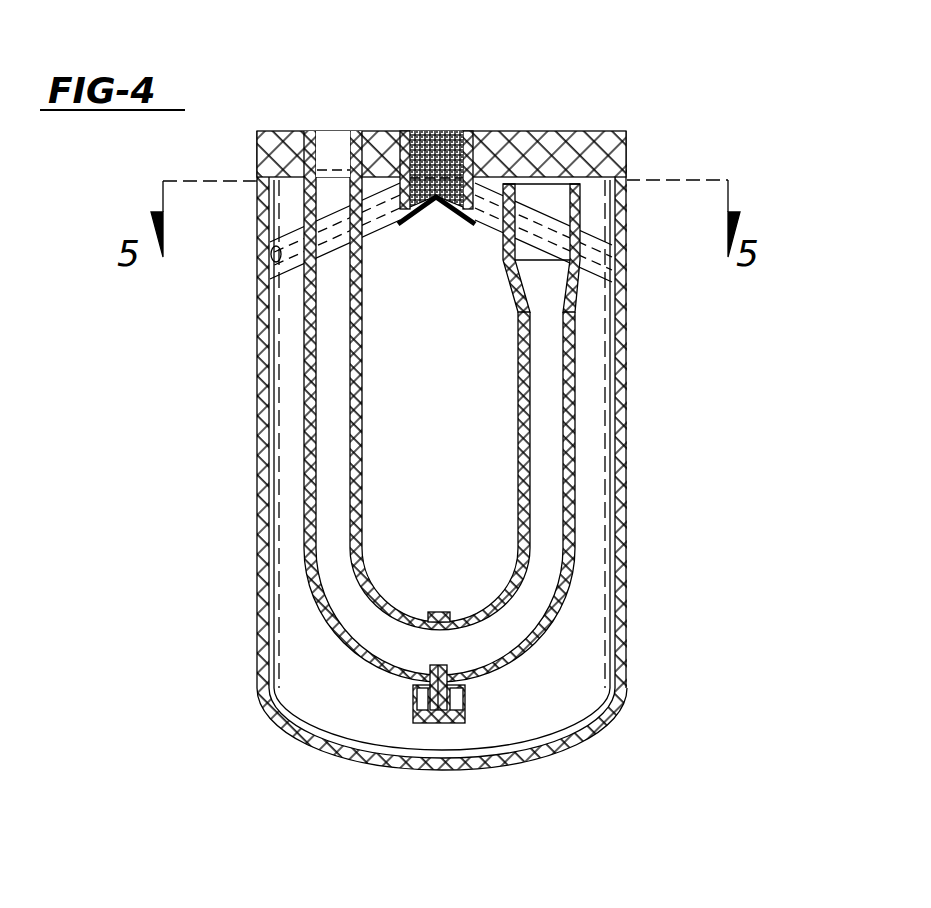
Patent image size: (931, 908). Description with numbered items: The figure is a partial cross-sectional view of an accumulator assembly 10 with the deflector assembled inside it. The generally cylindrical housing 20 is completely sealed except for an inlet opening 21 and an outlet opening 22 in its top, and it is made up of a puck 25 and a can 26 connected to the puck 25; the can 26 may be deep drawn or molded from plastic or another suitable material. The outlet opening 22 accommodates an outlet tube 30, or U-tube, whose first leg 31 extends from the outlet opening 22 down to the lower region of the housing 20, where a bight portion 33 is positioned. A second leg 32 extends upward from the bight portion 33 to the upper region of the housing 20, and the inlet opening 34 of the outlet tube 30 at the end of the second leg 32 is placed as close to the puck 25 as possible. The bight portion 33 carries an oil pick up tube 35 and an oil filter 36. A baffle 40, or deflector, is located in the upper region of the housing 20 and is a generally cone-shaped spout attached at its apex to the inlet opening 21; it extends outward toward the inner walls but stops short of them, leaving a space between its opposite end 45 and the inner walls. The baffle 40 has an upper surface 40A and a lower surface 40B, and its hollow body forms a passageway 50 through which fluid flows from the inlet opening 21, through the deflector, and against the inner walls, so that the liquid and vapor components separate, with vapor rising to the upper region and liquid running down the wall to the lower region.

The accumulator assembly 10 is at (712, 135).
The housing 20 is at (415, 450).
The inlet opening 21 is at (458, 145).
The outlet opening 22 is at (342, 140).
The puck 25 is at (607, 130).
The can 26 is at (610, 728).
The outlet tube 30 is at (440, 363).
The first leg 31 is at (303, 470).
The second leg 32 is at (574, 405).
The bight portion 33 is at (343, 640).
The inlet opening of the outlet tube 34 is at (560, 198).
The oil pick up tube 35 is at (432, 668).
The oil filter 36 is at (467, 703).
The baffle 40 is at (405, 238).
The upper surface 40A is at (268, 225).
The lower surface 40B is at (272, 302).
The opposite end of the baffle 45 is at (270, 273).
The passageway 50 is at (435, 148).